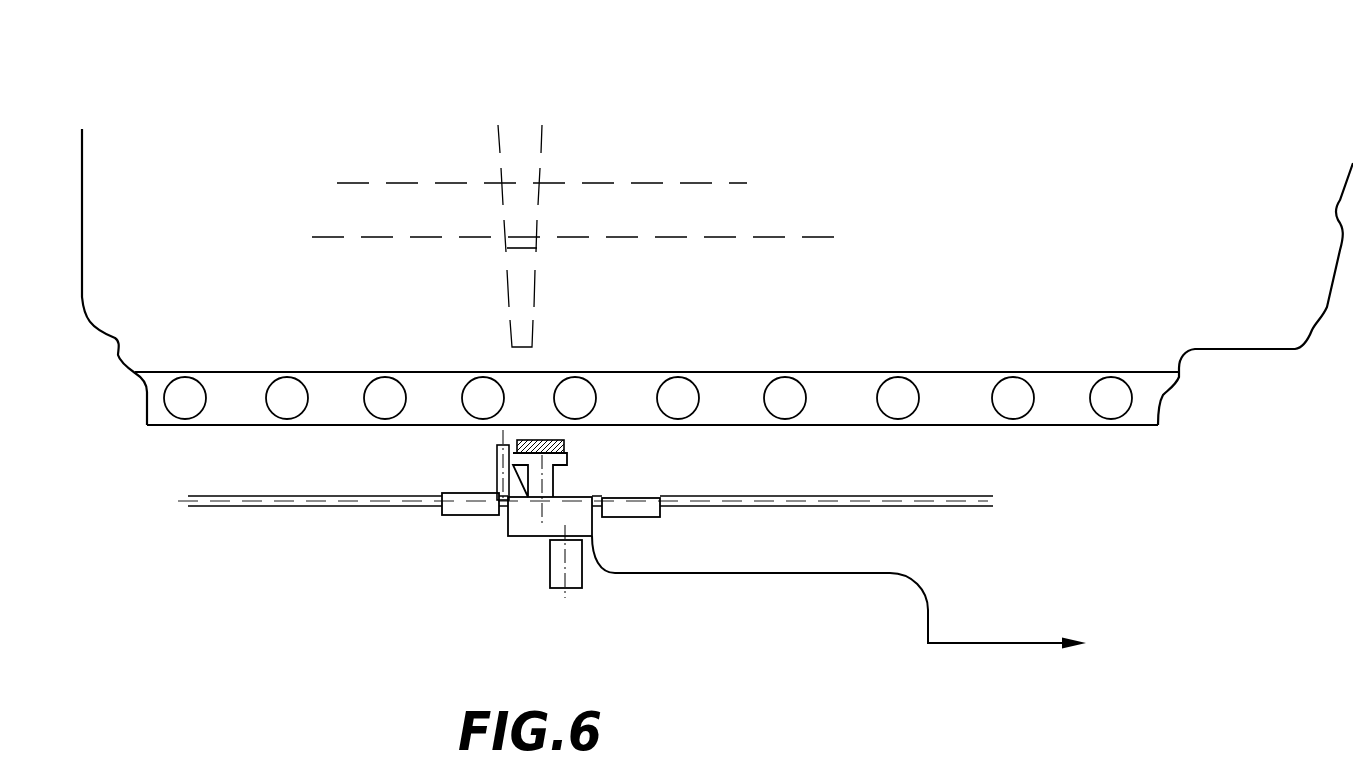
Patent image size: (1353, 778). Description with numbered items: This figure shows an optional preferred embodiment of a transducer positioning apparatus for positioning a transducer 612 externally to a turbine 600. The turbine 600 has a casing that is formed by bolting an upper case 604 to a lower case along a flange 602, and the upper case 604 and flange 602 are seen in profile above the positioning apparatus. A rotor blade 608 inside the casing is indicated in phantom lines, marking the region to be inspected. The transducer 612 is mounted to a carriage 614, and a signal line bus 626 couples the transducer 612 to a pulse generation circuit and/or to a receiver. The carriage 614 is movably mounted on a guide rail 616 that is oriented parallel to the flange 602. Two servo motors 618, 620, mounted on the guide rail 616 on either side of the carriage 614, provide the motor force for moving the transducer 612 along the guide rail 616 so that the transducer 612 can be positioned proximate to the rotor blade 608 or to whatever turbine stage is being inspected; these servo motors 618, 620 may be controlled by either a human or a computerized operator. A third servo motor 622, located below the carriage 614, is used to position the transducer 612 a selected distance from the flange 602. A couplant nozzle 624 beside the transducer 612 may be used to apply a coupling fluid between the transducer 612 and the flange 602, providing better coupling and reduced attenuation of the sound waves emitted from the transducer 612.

The turbine 600 is at (115, 344).
The flange 602 is at (223, 408).
The upper case 604 is at (1189, 332).
The rotor blade 608 is at (508, 283).
The transducer 612 is at (562, 462).
The carriage 614 is at (522, 518).
The guide rail 616 is at (953, 497).
The servo motor 618 is at (445, 513).
The servo motor 620 is at (627, 510).
The third servo motor 622 is at (565, 592).
The couplant nozzle 624 is at (503, 463).
The signal line bus 626 is at (925, 587).